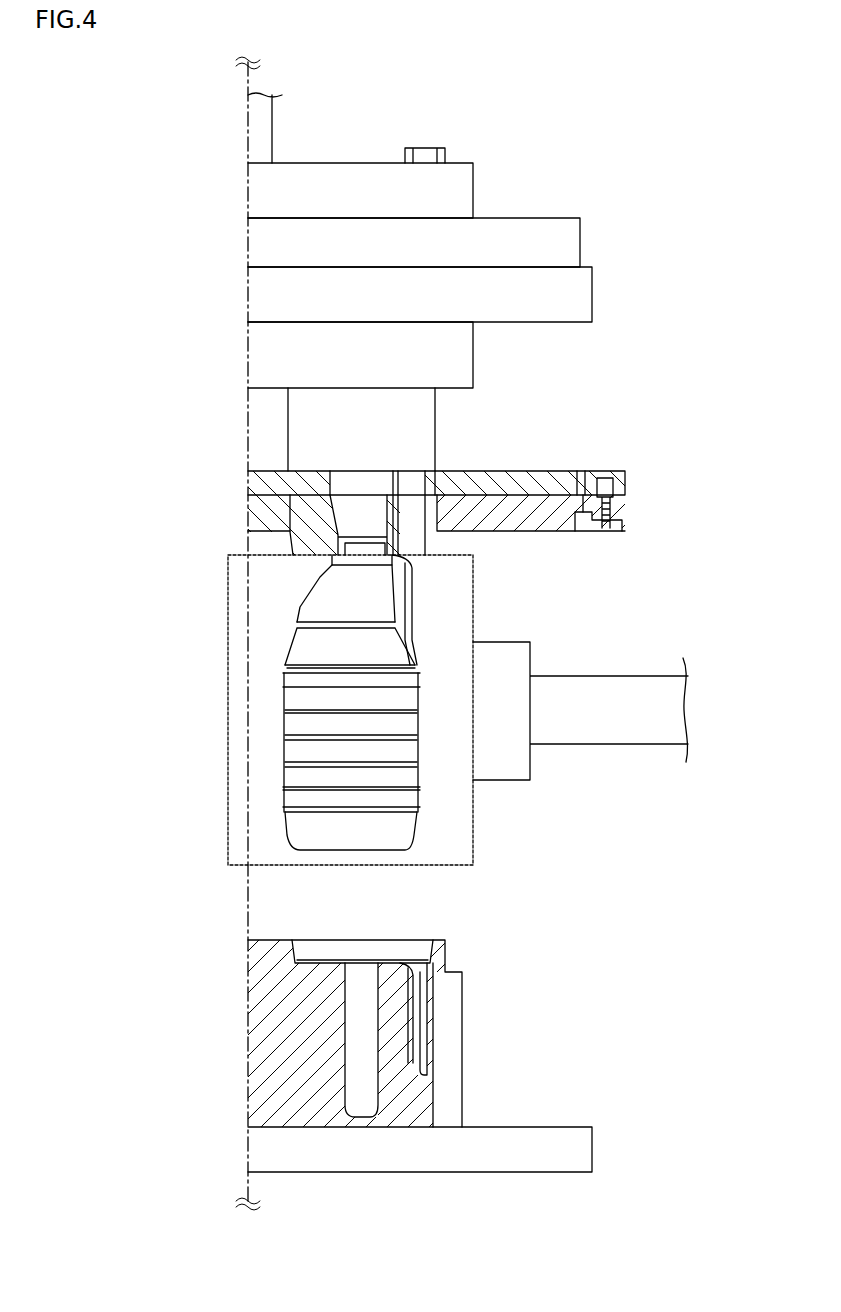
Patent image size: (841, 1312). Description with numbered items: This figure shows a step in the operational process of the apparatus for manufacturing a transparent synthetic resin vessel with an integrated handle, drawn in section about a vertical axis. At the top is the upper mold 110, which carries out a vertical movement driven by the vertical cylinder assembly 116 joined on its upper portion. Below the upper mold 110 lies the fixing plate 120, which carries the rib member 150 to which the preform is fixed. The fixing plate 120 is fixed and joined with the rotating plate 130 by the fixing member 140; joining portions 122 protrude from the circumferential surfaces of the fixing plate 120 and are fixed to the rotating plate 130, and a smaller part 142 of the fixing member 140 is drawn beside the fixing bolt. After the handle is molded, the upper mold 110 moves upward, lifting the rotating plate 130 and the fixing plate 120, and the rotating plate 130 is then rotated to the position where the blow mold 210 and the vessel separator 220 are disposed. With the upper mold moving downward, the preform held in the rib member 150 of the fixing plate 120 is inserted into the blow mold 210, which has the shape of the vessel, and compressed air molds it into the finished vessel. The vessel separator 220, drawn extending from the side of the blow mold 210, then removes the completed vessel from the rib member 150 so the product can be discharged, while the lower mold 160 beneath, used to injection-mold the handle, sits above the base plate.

The upper mold 110 is at (466, 358).
The vertical cylinder assembly 116 is at (466, 193).
The fixing plate 120 is at (547, 528).
The joining portion 122 is at (577, 494).
The rotating plate 130 is at (627, 481).
The fixing member 140 is at (627, 508).
The bracket 142 is at (577, 528).
The rib member 150 is at (297, 518).
The lower mold 160 is at (452, 1049).
The blow mold 210 is at (465, 829).
The vessel separator 220 is at (640, 685).